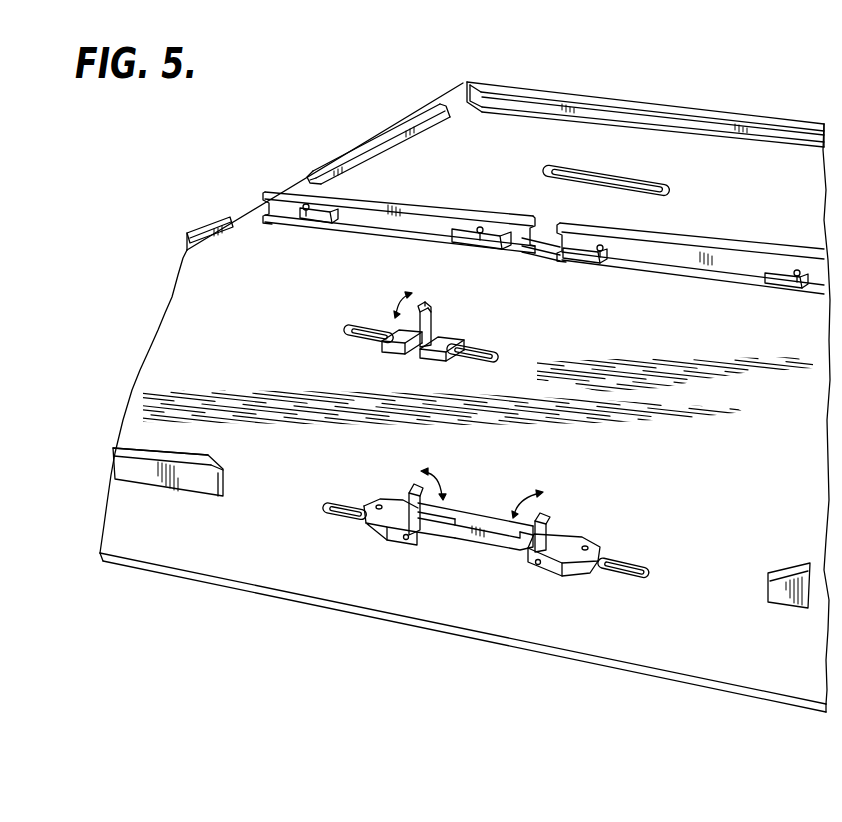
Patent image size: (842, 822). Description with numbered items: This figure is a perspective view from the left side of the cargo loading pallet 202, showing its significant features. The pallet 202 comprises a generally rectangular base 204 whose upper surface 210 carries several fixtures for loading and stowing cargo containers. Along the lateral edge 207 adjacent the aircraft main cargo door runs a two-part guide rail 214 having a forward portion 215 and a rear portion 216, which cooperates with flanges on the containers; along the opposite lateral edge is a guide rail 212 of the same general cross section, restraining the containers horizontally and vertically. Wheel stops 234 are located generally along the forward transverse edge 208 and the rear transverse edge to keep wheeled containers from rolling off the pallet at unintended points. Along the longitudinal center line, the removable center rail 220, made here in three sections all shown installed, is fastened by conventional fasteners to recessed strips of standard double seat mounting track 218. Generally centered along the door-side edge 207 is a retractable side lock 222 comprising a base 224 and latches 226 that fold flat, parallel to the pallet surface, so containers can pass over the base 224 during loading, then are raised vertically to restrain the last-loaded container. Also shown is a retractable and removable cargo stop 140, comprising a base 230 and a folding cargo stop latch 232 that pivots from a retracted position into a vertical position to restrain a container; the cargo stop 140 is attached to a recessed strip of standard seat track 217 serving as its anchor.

The removable cargo stop 140 is at (482, 329).
The cargo loading pallet 202 is at (322, 134).
The base 204 is at (130, 564).
The lateral edge adjacent the aircraft main cargo door 207 is at (276, 597).
The forward transverse edge 208 is at (238, 204).
The upper surface 210 is at (275, 282).
The guide rail 212 is at (465, 85).
The two-part guide rail 214 is at (106, 443).
The forward portion 215 is at (153, 446).
The rear portion 216 is at (776, 570).
The seat track 217 is at (668, 188).
The double seat mounting track 218 is at (536, 261).
The center rail 220 is at (411, 199).
The retractable side lock 222 is at (610, 505).
The base of side lock 224 is at (547, 578).
The latch 226 is at (409, 486).
The base of cargo stop 230 is at (438, 362).
The folding cargo stop latch 232 is at (430, 316).
The wheel stop 234 is at (413, 124).